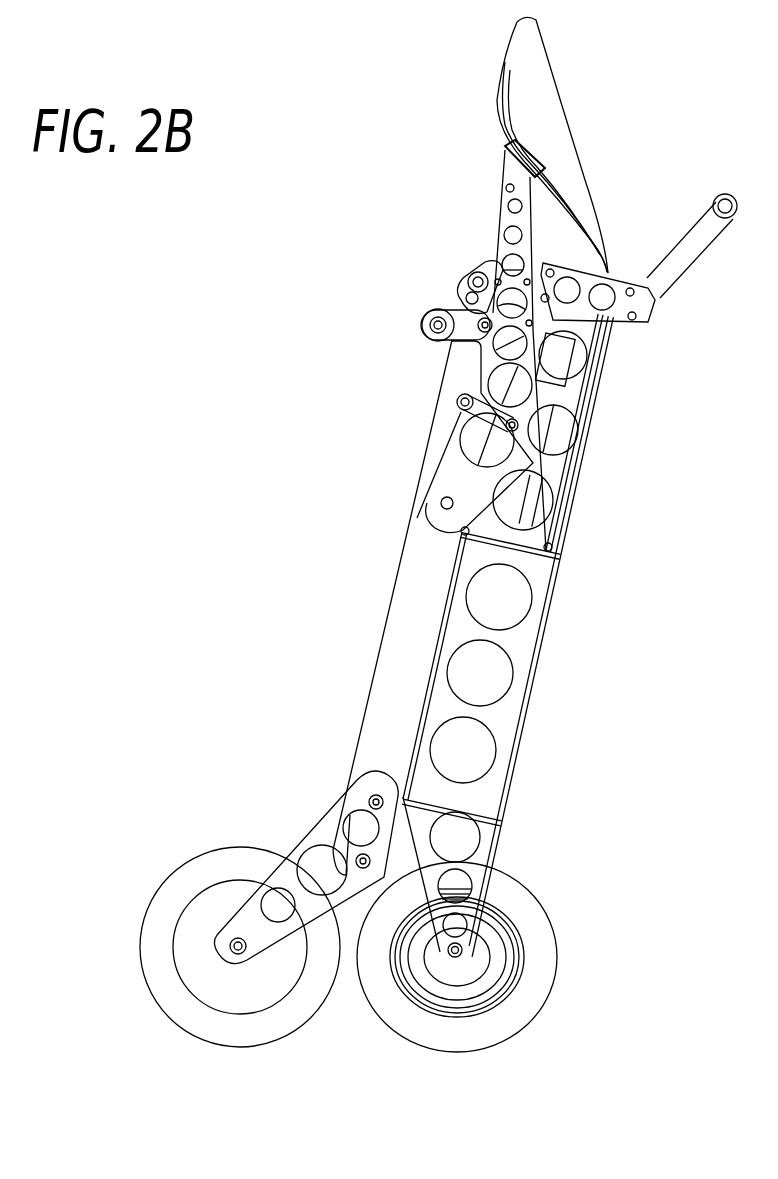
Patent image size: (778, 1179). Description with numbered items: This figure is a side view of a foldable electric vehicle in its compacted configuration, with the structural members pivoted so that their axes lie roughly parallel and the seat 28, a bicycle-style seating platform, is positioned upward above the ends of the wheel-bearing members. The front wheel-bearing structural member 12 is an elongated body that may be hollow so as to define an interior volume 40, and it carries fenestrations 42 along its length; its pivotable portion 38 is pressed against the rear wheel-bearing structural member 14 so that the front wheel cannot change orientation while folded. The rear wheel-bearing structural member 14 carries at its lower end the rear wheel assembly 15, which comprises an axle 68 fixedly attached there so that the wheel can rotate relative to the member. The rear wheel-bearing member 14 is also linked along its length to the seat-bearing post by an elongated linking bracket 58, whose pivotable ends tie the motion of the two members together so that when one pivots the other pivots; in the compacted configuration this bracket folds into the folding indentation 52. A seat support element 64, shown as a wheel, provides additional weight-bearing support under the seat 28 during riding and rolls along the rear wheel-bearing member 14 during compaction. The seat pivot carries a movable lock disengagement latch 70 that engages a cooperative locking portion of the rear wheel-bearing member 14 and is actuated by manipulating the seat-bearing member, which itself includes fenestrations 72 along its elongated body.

The front wheel-bearing structural member 12 is at (541, 626).
The rear wheel-bearing structural member 14 is at (400, 616).
The rear wheel assembly 15 is at (176, 888).
The seat 28 is at (506, 63).
The pivotable portion 38 is at (520, 660).
The interior volume 40 is at (532, 494).
The fenestrations 42 is at (533, 597).
The folding indentation 52 is at (583, 373).
The elongated linking bracket 58 is at (462, 406).
The seat support element 64 is at (425, 324).
The axle 68 is at (230, 948).
The lock disengagement latch 70 is at (470, 290).
The fenestrations 72 is at (512, 214).